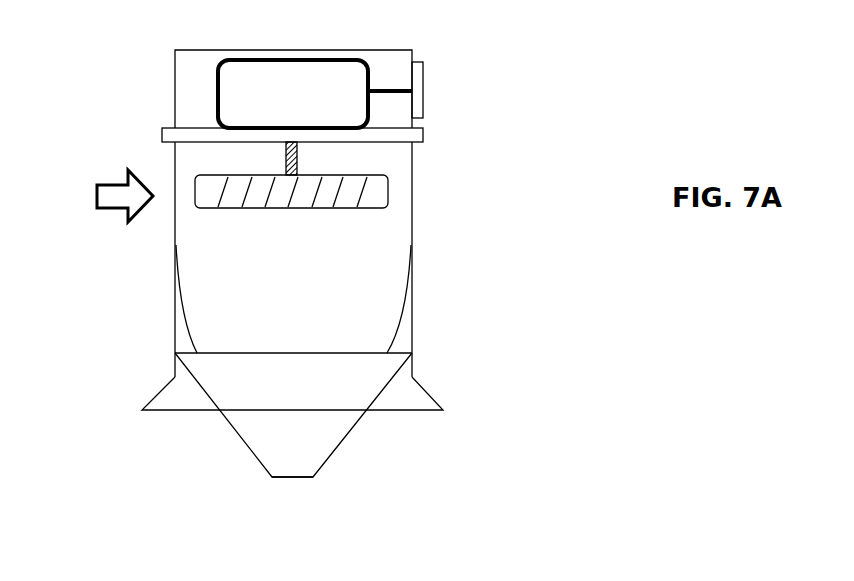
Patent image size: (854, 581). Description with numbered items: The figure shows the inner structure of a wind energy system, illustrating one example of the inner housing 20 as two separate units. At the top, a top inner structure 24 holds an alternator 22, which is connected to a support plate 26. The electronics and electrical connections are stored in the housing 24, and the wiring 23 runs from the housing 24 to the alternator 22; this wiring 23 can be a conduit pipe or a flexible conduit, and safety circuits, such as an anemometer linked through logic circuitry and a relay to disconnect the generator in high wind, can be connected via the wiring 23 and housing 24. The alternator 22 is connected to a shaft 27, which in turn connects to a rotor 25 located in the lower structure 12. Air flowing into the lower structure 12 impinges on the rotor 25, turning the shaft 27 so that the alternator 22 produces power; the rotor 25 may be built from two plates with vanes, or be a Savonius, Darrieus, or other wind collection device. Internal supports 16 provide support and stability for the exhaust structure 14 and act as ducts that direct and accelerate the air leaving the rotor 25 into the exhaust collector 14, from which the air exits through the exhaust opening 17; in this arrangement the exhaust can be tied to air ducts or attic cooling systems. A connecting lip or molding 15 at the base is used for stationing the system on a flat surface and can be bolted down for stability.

The lower structure 12 is at (104, 196).
The exhaust structure 14 is at (242, 422).
The connecting lip/molding 15 is at (150, 393).
The internal supports 16 is at (183, 318).
The exhaust opening 17 is at (297, 478).
The inner housing 20 is at (432, 253).
The alternator 22 is at (263, 58).
The wiring 23 is at (387, 90).
The top inner structure 24 is at (152, 84).
The rotor 25 is at (392, 195).
The support plate 26 is at (425, 134).
The shaft 27 is at (300, 157).